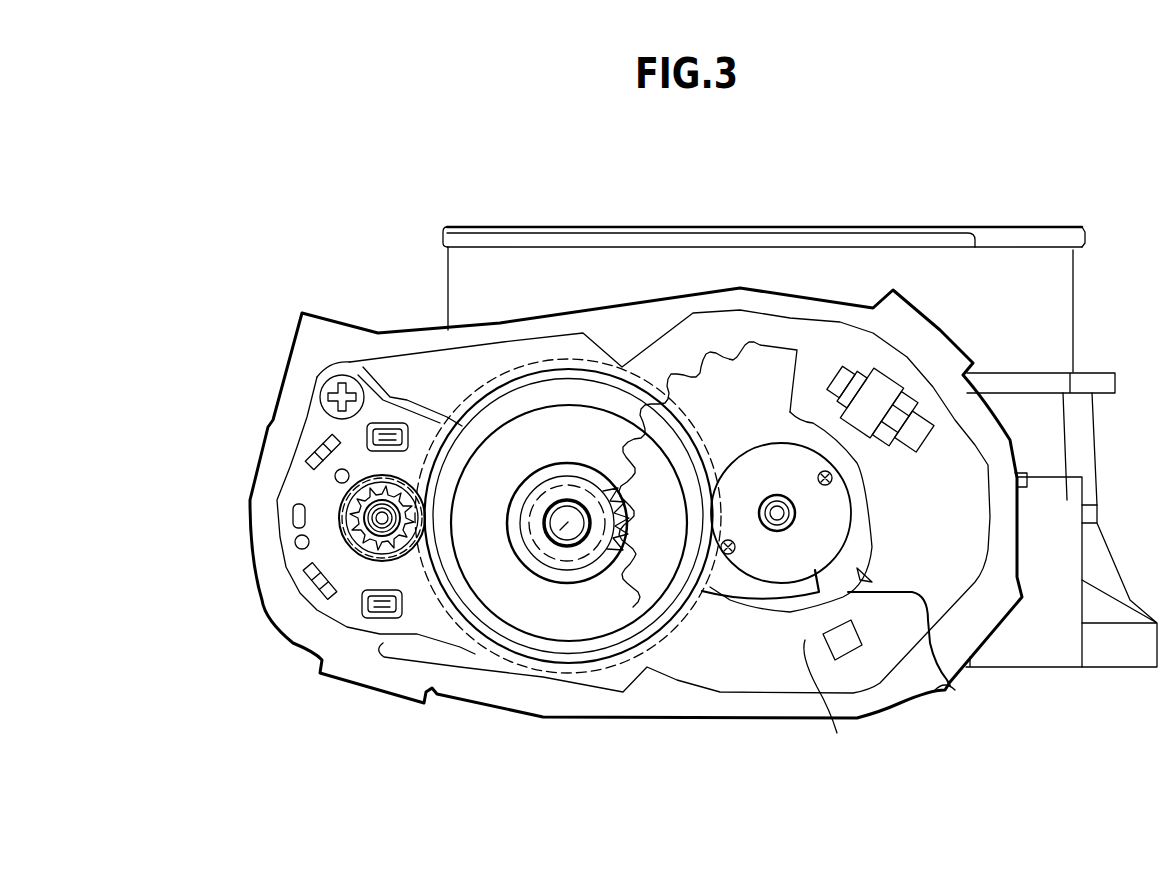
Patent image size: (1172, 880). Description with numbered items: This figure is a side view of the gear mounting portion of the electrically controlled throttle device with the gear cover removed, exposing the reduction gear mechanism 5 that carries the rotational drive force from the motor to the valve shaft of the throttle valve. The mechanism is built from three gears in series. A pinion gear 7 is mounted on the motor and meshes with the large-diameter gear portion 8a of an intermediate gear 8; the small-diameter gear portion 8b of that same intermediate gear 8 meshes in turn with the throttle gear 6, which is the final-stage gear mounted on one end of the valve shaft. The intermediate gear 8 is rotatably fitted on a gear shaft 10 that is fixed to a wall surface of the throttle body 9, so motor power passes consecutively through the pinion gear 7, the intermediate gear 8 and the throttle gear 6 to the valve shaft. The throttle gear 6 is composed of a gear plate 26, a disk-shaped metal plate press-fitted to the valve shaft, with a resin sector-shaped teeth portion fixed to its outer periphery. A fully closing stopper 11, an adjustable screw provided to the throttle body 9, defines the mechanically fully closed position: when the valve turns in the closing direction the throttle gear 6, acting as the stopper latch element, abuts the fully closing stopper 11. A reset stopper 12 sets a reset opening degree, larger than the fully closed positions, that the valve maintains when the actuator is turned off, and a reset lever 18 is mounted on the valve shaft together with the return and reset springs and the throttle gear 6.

The reduction gear mechanism 5 is at (605, 765).
The throttle gear 6 is at (768, 373).
The pinion gear 7 is at (343, 533).
The intermediate gear 8 is at (493, 462).
The large-diameter gear portion 8a is at (533, 388).
The small-diameter gear portion 8b is at (582, 475).
The throttle body 9 is at (1108, 643).
The gear shaft 10 is at (563, 528).
The fully closing stopper 11 is at (923, 413).
The reset stopper 12 is at (830, 613).
The reset lever 18 is at (950, 684).
The gear plate 26 is at (773, 558).